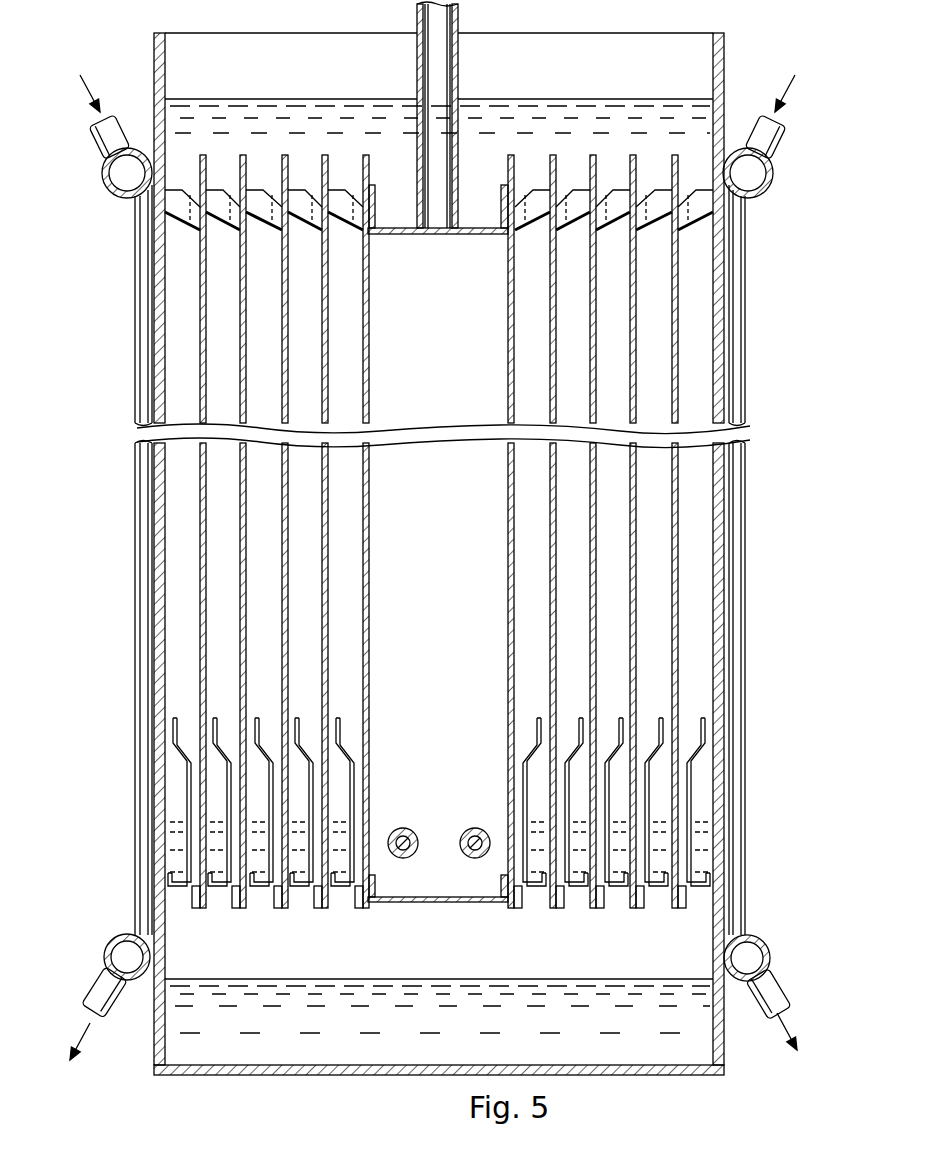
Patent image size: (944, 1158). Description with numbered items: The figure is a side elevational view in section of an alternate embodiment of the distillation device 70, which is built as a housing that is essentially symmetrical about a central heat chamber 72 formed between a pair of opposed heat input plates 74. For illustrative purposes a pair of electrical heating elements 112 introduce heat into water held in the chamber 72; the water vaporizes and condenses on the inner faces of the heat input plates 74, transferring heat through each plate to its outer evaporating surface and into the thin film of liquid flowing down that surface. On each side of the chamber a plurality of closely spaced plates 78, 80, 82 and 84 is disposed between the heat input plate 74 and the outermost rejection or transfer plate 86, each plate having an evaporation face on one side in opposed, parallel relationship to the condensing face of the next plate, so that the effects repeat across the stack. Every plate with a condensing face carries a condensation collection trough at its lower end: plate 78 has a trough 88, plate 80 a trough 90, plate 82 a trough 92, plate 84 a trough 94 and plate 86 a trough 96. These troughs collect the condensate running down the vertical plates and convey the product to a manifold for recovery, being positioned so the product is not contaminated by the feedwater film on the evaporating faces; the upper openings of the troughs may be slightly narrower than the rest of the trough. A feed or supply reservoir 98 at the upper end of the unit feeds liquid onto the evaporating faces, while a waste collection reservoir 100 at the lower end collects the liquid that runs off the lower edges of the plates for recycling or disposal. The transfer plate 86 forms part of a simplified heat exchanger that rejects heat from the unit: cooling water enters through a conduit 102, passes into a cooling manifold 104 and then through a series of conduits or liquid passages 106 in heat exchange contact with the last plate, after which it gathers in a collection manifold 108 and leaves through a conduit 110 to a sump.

The device 70 is at (132, 563).
The central heat chamber 72 is at (444, 405).
The heat input plates 74 is at (368, 342).
The plate 78 is at (328, 262).
The plate 80 is at (285, 362).
The plate 82 is at (245, 258).
The plate 84 is at (204, 362).
The rejection or transfer plate 86 is at (164, 272).
The trough 88 is at (340, 885).
The trough 90 is at (298, 885).
The trough 92 is at (258, 885).
The trough 94 is at (215, 885).
The trough 96 is at (180, 885).
The feed or supply reservoir 98 is at (722, 57).
The waste collection reservoir 100 is at (295, 1073).
The conduit 102 is at (113, 118).
The cooling manifold 104 is at (112, 193).
The conduits or liquid passages 106 is at (134, 352).
The collection manifold 108 is at (118, 930).
The conduit 110 is at (104, 1007).
The electrical heating elements 112 is at (468, 830).